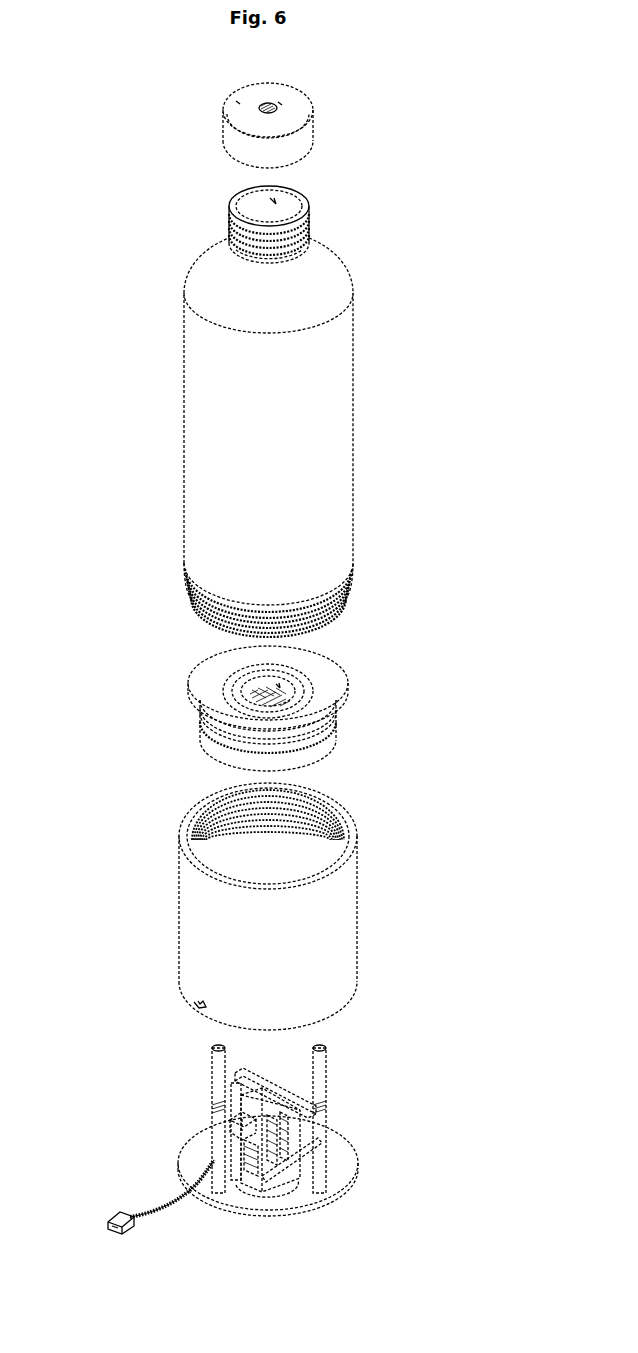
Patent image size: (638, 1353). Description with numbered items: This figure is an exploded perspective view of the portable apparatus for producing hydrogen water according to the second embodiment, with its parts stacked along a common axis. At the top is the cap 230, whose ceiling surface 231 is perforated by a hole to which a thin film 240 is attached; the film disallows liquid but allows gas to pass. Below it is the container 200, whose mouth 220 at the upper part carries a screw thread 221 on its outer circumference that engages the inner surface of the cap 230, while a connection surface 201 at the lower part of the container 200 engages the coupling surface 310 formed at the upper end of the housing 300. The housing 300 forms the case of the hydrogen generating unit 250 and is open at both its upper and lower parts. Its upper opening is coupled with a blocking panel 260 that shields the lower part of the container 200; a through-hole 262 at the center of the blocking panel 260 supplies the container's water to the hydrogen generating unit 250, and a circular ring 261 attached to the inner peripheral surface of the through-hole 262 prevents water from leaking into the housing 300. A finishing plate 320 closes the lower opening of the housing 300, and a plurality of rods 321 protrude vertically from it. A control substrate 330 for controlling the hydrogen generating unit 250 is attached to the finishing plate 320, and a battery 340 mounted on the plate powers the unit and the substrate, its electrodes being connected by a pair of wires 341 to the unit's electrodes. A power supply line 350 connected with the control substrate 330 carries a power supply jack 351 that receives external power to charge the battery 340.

The container 200 is at (332, 421).
The connection surface 201 is at (352, 588).
The mouth 220 is at (286, 199).
The screw thread 221 is at (231, 220).
The cap 230 is at (304, 148).
The ceiling surface 231 is at (237, 104).
The thin film 240 is at (278, 105).
The hydrogen generating unit 250 is at (338, 735).
The blocking panel 260 is at (205, 671).
The circular ring 261 is at (233, 697).
The through-hole 262 is at (282, 683).
The housing 300 is at (359, 912).
The coupling surface 310 is at (204, 801).
The finishing plate 320 is at (342, 1165).
The rods 321 is at (212, 1059).
The control substrate 330 is at (268, 1172).
The battery 340 is at (276, 1094).
The wires 341 is at (319, 1140).
The power supply line 350 is at (173, 1193).
The power supply jack 351 is at (115, 1213).